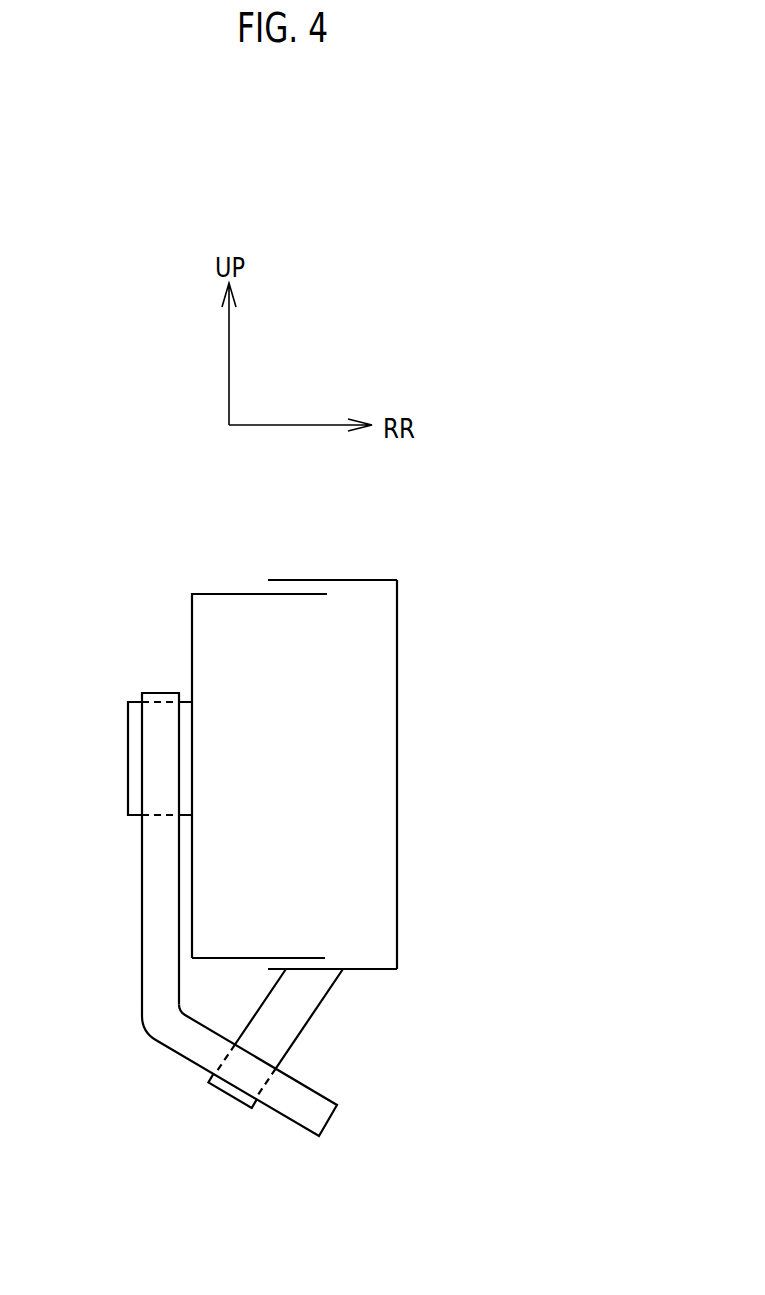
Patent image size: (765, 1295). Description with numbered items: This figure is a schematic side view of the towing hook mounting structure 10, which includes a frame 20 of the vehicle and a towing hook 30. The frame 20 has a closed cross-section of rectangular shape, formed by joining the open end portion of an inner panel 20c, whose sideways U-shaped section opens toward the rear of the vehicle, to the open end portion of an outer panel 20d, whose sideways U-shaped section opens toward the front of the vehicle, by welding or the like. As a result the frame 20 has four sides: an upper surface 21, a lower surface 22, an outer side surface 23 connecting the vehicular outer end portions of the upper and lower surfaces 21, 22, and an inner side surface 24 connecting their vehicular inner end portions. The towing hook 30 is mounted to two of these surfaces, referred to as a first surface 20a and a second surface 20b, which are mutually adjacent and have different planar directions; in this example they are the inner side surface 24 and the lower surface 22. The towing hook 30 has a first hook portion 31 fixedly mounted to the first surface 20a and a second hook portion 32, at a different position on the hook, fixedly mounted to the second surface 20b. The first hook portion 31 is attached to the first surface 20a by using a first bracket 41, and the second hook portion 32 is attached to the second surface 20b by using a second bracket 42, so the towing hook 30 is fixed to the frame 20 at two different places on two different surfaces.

The towing hook mounting structure 10 is at (511, 795).
The frame 20 is at (364, 564).
The first surface 20a is at (192, 661).
The second surface 20b is at (360, 970).
The inner panel 20c is at (192, 605).
The outer panel 20d is at (397, 596).
The upper surface 21 is at (240, 594).
The lower surface 22 is at (387, 970).
The outer side surface 23 is at (397, 700).
The inner side surface 24 is at (192, 633).
The towing hook 30 is at (158, 1061).
The first hook portion 31 is at (162, 750).
The second hook portion 32 is at (248, 1073).
The first bracket 41 is at (128, 799).
The second bracket 42 is at (288, 1022).